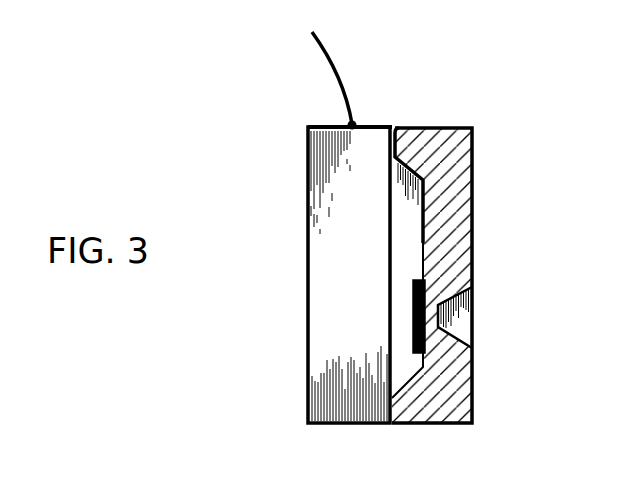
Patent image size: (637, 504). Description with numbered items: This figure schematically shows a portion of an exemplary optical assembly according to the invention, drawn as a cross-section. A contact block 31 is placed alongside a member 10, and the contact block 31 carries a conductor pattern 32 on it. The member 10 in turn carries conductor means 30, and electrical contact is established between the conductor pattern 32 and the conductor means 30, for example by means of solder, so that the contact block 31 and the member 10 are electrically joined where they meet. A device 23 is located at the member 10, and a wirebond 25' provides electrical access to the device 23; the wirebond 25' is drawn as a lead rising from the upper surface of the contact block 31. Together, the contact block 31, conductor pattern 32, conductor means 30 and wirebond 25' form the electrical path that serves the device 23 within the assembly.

The member 10 is at (452, 204).
The device 23 is at (420, 352).
The wirebond 25' is at (295, 75).
The conductor means 30 is at (413, 310).
The contact block 31 is at (328, 272).
The conductor pattern 32 is at (318, 123).